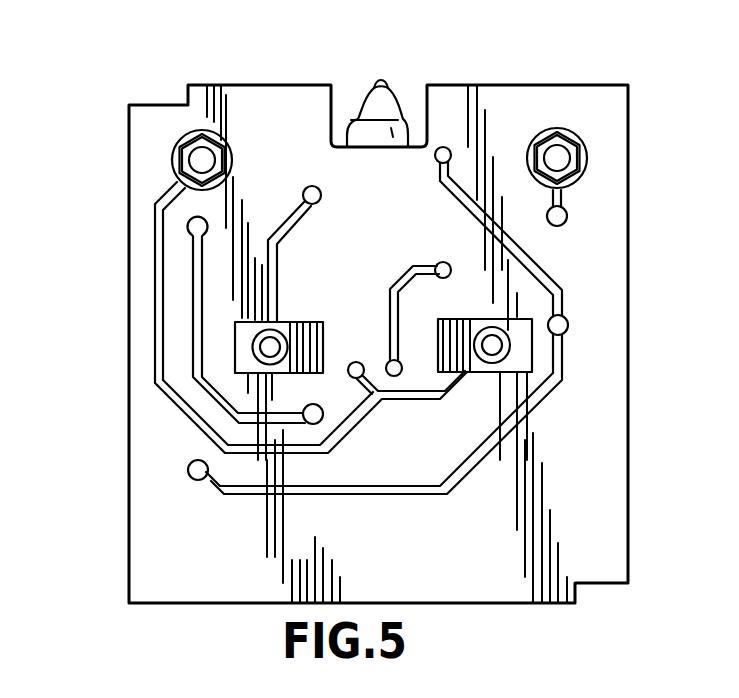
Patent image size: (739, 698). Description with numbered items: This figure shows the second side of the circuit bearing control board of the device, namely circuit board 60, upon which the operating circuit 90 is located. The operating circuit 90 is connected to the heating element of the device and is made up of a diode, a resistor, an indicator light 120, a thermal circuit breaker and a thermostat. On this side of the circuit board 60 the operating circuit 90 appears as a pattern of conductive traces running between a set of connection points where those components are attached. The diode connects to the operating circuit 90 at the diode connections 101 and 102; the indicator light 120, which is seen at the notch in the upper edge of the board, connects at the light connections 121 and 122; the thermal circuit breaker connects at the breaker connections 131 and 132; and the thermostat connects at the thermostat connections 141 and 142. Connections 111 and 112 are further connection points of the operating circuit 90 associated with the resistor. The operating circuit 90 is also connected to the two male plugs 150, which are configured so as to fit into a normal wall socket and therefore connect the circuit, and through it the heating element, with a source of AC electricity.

The circuit board 60 is at (128, 372).
The operating circuit 90 is at (145, 238).
The diode connection 101 is at (557, 228).
The diode connection 102 is at (568, 325).
The terminal pad 111 is at (435, 156).
The terminal pad 112 is at (442, 262).
The indicator light 120 is at (384, 103).
The light connection 121 is at (352, 378).
The light connection 122 is at (397, 376).
The breaker connection 131 is at (322, 196).
The breaker connection 132 is at (317, 405).
The thermostat connection 141 is at (207, 216).
The thermostat connection 142 is at (188, 472).
The male plugs 150 is at (302, 320).